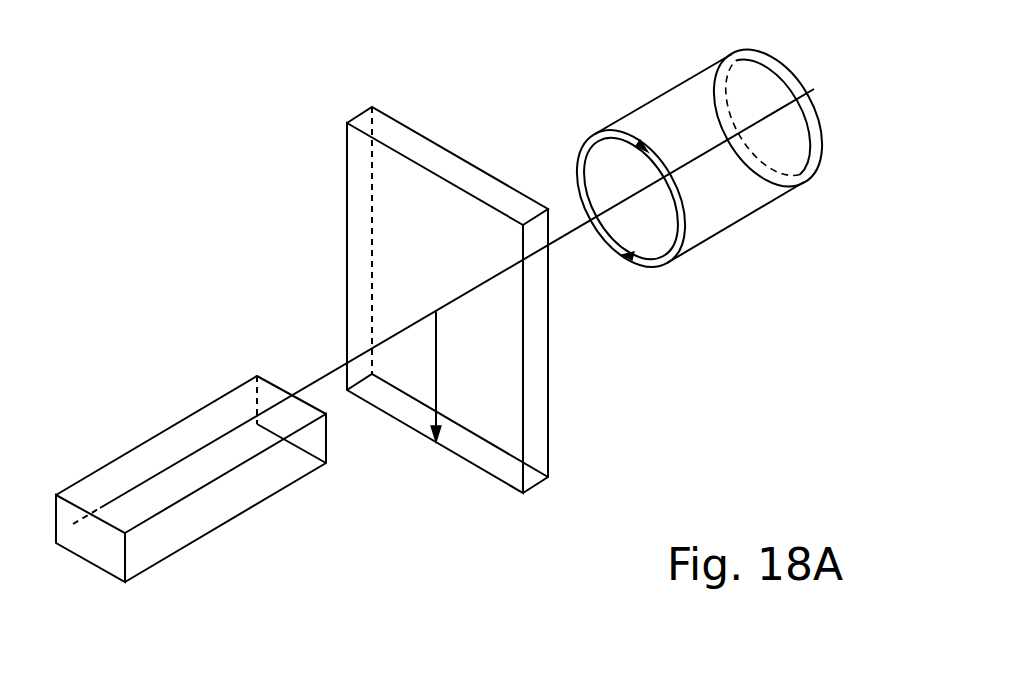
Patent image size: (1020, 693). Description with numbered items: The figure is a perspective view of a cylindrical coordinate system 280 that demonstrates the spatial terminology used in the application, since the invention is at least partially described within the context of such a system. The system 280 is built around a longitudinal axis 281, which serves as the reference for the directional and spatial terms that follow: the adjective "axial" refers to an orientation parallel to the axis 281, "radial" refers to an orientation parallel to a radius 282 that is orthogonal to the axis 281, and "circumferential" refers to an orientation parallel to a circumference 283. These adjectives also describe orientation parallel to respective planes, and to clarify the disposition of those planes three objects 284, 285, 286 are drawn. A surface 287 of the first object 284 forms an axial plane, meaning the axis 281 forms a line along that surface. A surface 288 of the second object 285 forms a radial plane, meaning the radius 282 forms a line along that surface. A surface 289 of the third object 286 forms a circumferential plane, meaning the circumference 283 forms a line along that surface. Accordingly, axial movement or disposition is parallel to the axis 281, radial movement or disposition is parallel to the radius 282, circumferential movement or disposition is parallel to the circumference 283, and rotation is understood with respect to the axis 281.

The cylindrical coordinate system 280 is at (297, 163).
The longitudinal axis 281 is at (810, 90).
The radius 282 is at (437, 370).
The circumference 283 is at (577, 159).
The object 284 is at (185, 511).
The object 285 is at (446, 322).
The object 286 is at (658, 157).
The surface 287 is at (147, 459).
The surface 288 is at (362, 253).
The surface 289 is at (663, 92).